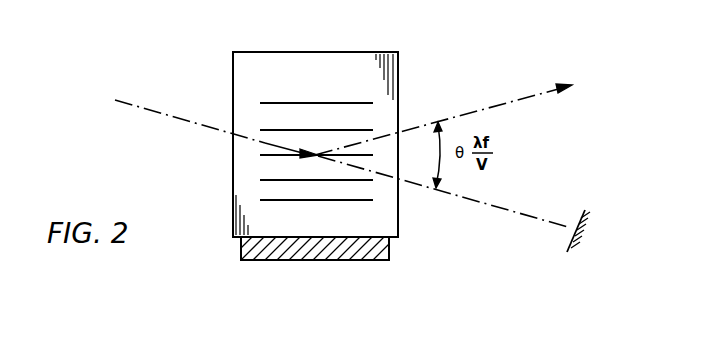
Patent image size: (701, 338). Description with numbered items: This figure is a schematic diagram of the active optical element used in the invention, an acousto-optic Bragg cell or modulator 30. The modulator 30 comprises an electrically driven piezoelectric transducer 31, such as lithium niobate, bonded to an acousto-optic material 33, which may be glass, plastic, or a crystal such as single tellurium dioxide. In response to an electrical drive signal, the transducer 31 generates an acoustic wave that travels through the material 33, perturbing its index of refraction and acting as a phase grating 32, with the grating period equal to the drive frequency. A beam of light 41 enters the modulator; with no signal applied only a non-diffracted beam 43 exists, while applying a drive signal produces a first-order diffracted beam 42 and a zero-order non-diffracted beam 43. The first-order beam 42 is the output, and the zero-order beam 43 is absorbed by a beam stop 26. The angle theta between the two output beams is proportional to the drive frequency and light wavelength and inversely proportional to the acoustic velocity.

The acousto-optic modulator 30 is at (359, 41).
The acousto-optic material 33 is at (240, 78).
The phase grating 32 is at (306, 200).
The piezoelectric transducer 31 is at (263, 262).
The beam of light 41 is at (188, 120).
The first-order diffracted beam 42 is at (457, 115).
The zero-order non-diffracted beam 43 is at (478, 206).
The beam stop 26 is at (575, 220).